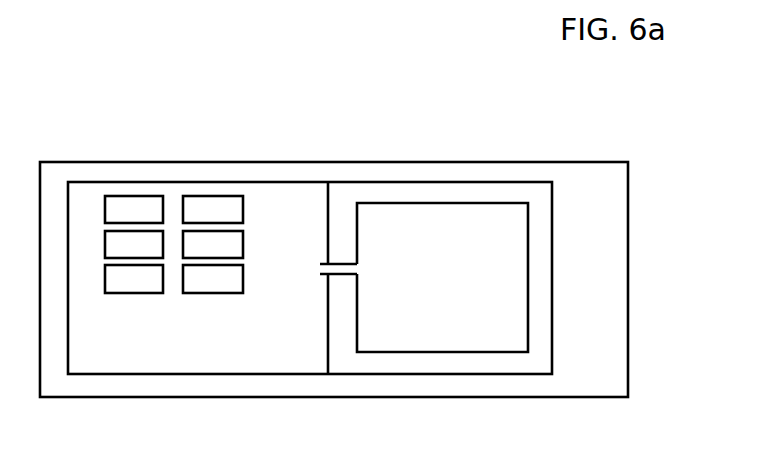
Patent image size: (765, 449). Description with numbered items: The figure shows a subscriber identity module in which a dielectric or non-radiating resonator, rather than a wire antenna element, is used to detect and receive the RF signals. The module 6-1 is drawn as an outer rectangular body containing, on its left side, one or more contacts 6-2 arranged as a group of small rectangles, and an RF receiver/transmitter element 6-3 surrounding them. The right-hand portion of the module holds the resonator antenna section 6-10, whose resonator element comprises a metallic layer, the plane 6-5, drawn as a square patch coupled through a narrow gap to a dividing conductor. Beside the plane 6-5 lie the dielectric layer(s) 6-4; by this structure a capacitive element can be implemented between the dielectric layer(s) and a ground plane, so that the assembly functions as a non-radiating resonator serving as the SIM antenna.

The module 6-1 is at (240, 160).
The contacts 6-2 is at (147, 203).
The RF receiver/transmitter element 6-3 is at (87, 205).
The dielectric layer 6-4 is at (542, 350).
The plane 6-5 is at (505, 317).
The antenna section 6-10 is at (528, 130).